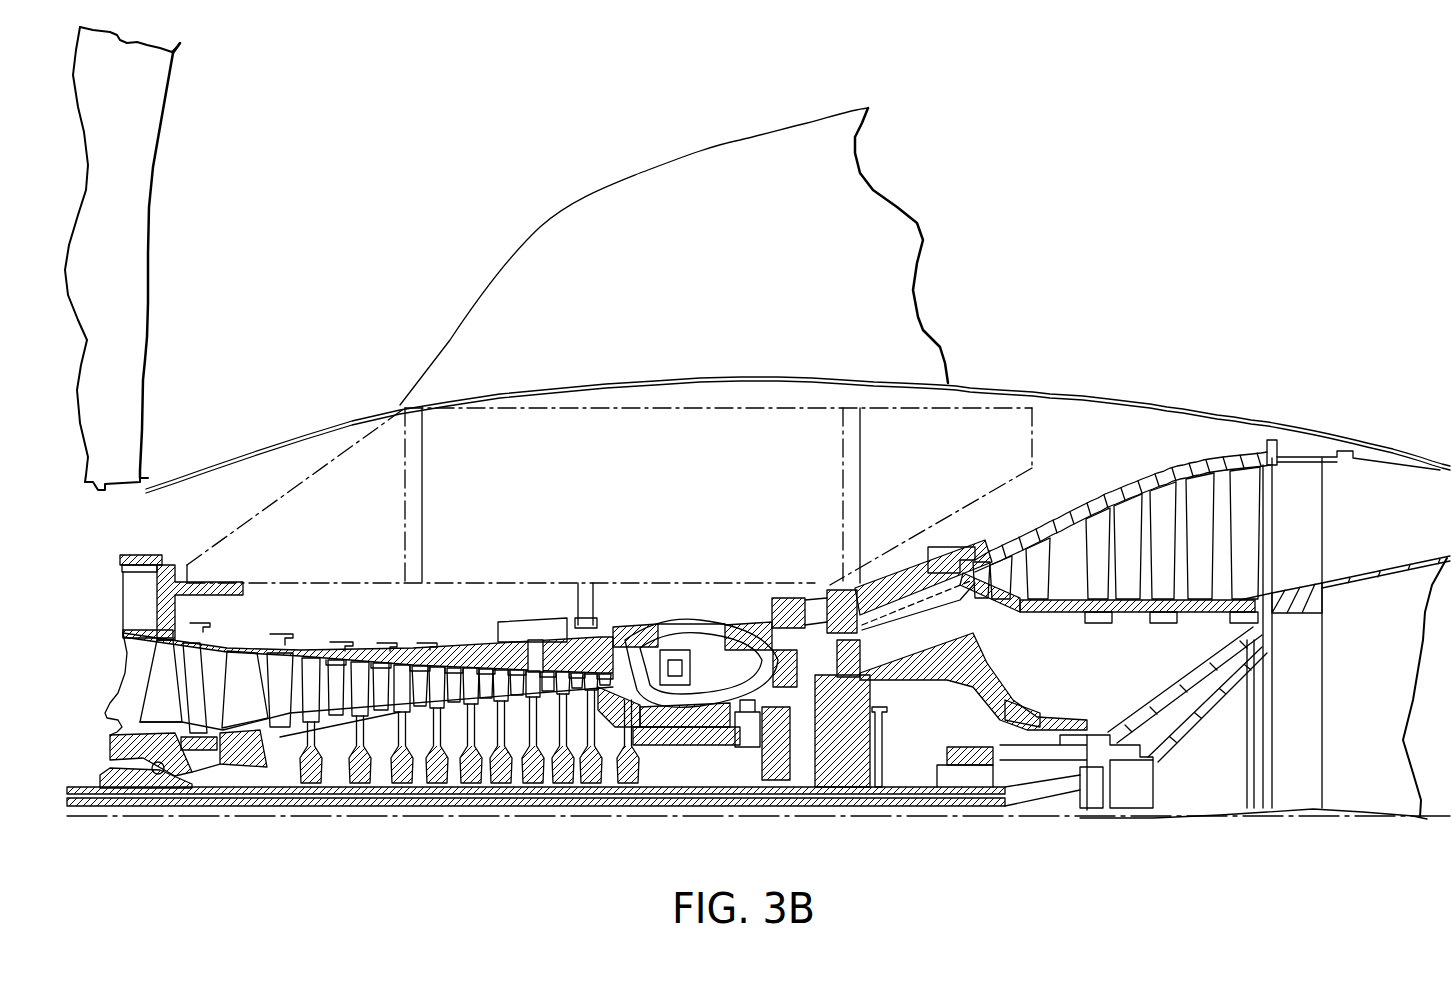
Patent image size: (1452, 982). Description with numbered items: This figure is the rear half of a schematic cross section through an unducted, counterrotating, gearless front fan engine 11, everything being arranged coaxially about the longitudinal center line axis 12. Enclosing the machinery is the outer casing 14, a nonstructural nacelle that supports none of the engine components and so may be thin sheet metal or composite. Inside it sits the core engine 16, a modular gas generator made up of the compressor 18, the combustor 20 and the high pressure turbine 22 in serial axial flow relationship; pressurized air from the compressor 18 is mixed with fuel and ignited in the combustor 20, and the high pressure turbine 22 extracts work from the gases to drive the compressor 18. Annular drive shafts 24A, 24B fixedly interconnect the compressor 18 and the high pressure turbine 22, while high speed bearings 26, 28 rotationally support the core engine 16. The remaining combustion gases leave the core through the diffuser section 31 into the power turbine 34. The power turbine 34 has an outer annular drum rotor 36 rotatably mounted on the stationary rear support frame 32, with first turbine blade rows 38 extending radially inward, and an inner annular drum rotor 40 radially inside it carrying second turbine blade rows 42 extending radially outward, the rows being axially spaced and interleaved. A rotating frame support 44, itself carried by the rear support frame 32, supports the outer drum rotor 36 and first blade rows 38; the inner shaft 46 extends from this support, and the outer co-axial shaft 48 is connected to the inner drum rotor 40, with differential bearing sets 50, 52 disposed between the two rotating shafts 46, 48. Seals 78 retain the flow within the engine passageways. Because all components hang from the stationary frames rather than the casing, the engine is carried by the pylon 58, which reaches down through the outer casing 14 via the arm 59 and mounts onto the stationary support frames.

The engine 11 is at (993, 302).
The longitudinal center line axis 12 is at (1287, 820).
The outer casing 14 is at (643, 380).
The core engine 16 is at (468, 660).
The compressor 18 is at (310, 663).
The combustor 20 is at (717, 660).
The high pressure turbine 22 is at (818, 650).
The annular drive shaft 24A is at (207, 777).
The annular drive shaft 24B is at (737, 742).
The high speed bearing 26 is at (160, 776).
The high speed bearing 28 is at (973, 773).
The diffuser section 31 is at (943, 687).
The rear support frame 32 is at (862, 600).
The power turbine 34 is at (1110, 523).
The outer annular drum rotor 36 is at (1200, 457).
The first turbine blade rows 38 is at (1063, 533).
The inner annular drum rotor 40 is at (1100, 610).
The second turbine blade rows 42 is at (1170, 600).
The rotating frame support 44 is at (1300, 477).
The inner shaft 46 is at (1227, 680).
The outer co-axial shaft 48 is at (1157, 685).
The differential bearing set 50 is at (1090, 760).
The differential bearing set 52 is at (1097, 727).
The pylon 58 is at (842, 200).
The arm 59 is at (752, 407).
The seals 78 is at (953, 542).